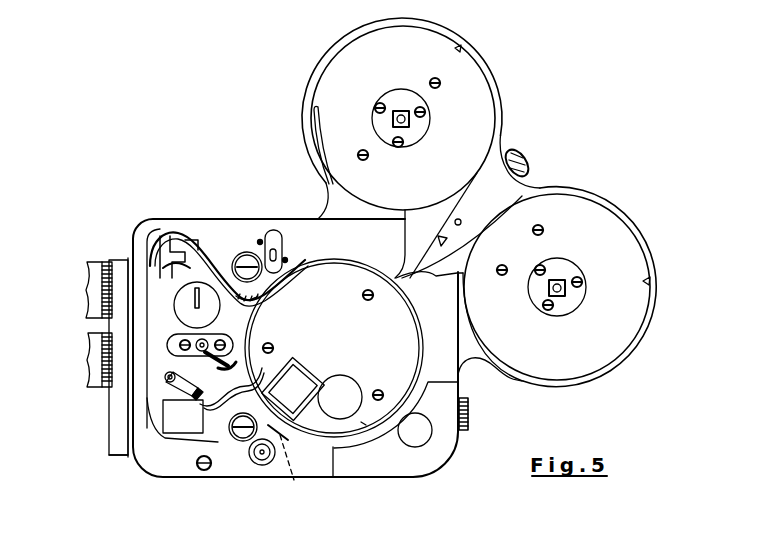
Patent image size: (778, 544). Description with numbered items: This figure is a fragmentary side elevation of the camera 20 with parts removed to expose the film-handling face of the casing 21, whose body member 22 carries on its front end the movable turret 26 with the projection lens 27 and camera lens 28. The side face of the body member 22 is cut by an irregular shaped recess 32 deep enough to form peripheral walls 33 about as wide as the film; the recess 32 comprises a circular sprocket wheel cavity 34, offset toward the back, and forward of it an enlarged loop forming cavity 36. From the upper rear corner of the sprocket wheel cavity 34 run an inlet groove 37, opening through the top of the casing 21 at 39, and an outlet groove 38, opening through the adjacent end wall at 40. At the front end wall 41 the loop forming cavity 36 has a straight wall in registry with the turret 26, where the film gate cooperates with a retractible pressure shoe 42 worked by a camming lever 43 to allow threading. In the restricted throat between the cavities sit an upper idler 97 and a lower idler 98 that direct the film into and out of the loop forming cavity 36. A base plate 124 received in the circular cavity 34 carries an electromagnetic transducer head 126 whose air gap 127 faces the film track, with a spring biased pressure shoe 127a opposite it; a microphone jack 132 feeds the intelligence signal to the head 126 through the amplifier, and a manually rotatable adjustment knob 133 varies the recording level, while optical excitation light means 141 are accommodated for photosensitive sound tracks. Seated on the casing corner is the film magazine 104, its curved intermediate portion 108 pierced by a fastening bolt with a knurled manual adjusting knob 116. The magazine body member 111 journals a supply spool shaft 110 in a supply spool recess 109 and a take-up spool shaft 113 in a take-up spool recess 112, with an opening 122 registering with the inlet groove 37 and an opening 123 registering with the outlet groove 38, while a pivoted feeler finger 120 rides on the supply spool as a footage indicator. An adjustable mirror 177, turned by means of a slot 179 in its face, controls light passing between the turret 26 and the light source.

The camera 20 is at (307, 197).
The casing 21 is at (177, 220).
The body member 22 is at (240, 233).
The movable turret 26 is at (128, 447).
The projection lens 27 is at (92, 289).
The camera lens 28 is at (98, 383).
The irregular shaped recess 32 is at (243, 317).
The peripheral walls 33 is at (245, 440).
The sprocket wheel cavity 34 is at (364, 424).
The loop forming cavity 36 is at (152, 253).
The inlet groove 37 is at (394, 277).
The outlet groove 38 is at (407, 280).
The inlet groove opening 39 is at (401, 212).
The outlet groove opening 40 is at (466, 274).
The front end wall 41 is at (126, 347).
The pressure shoe 42 is at (150, 450).
The camming lever 43 is at (200, 376).
The upper idler 97 is at (260, 298).
The lower idler 98 is at (253, 377).
The film magazine 104 is at (506, 146).
The curved intermediate portion 108 is at (446, 240).
The supply spool recess 109 is at (455, 48).
The supply spool shaft 110 is at (400, 110).
The magazine body member 111 is at (499, 126).
The take-up spool recess 112 is at (643, 281).
The take-up spool shaft 113 is at (560, 291).
The knurled manual adjusting knob 116 is at (528, 160).
The feeler finger 120 is at (320, 122).
The opening 122 is at (423, 218).
The opening 123 is at (442, 266).
The base plate 124 is at (398, 363).
The electromagnetic transducer head 126 is at (312, 372).
The air gap 127 is at (277, 428).
The spring biased pressure shoe 127a is at (310, 467).
The microphone jack 132 is at (263, 455).
The manually rotatable adjustment knob 133 is at (469, 413).
The optical excitation light means 141 is at (418, 432).
The mirror 177 is at (178, 315).
The slot 179 is at (194, 294).